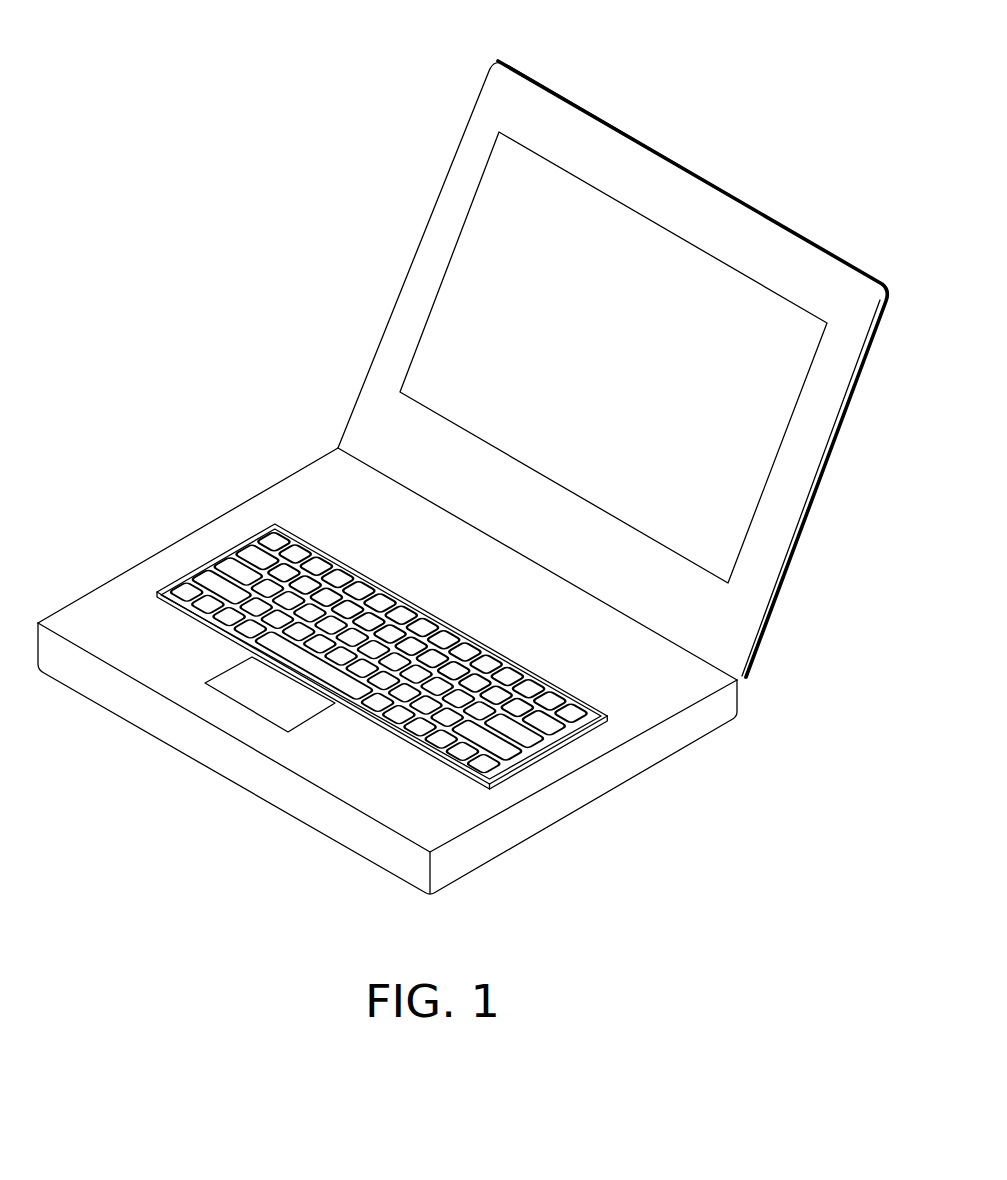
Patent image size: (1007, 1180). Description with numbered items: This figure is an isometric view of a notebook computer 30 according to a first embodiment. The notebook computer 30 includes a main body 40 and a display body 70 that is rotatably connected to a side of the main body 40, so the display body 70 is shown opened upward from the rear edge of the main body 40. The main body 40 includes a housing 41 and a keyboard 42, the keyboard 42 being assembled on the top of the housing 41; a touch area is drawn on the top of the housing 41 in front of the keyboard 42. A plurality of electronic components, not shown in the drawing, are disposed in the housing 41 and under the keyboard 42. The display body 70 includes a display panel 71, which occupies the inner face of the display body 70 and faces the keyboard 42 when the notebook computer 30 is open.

The notebook computer 30 is at (611, 345).
The display body 70 is at (780, 509).
The display panel 71 is at (493, 218).
The main body 40 is at (387, 641).
The housing 41 is at (561, 812).
The keyboard 42 is at (230, 568).